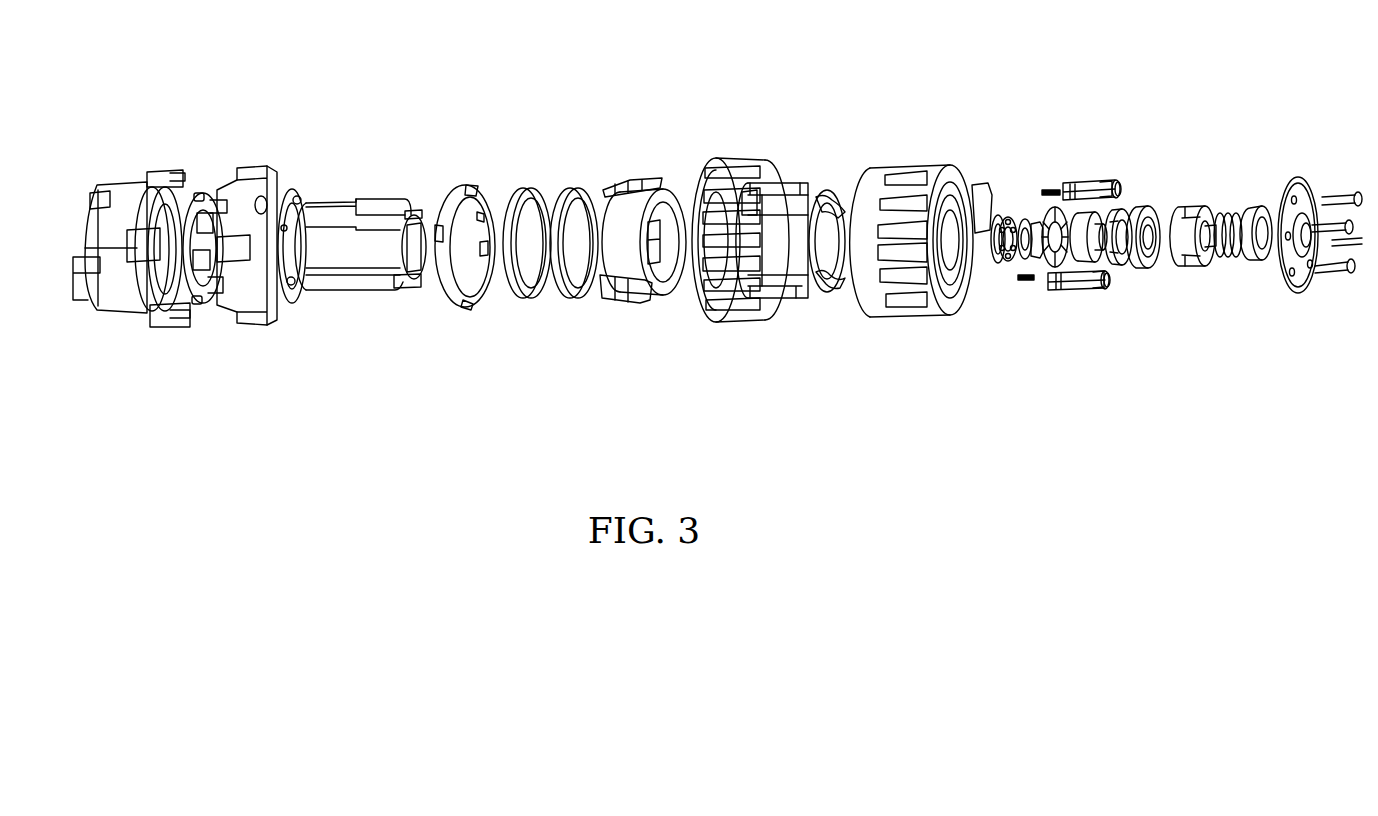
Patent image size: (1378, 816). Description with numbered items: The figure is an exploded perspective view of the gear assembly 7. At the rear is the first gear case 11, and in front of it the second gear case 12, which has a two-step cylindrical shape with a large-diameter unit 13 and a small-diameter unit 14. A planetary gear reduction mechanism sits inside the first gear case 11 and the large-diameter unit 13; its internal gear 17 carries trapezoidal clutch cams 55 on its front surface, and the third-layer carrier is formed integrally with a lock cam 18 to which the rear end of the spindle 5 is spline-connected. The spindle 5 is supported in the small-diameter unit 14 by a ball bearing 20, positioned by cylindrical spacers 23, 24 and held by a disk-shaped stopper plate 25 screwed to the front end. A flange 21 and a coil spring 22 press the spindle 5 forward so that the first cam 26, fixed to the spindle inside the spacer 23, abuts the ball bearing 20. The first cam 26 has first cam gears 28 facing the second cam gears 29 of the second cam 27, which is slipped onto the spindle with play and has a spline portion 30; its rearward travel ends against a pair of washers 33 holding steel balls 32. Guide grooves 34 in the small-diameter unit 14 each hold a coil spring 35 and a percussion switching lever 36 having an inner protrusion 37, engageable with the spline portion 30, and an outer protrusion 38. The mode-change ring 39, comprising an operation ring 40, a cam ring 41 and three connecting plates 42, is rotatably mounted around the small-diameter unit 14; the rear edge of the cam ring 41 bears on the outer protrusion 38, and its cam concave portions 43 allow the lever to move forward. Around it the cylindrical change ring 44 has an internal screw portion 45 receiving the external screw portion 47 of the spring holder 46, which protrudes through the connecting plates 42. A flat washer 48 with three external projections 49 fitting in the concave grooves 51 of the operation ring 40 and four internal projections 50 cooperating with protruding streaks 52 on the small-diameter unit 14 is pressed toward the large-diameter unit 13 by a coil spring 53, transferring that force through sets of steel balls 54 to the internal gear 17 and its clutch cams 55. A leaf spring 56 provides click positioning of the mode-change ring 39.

The spindle 5 is at (1213, 217).
The gear assembly 7 is at (735, 103).
The first gear case 11 is at (119, 190).
The second gear case 12 is at (310, 177).
The large-diameter unit 13 is at (270, 187).
The small-diameter unit 14 is at (352, 213).
The internal gear 17 is at (177, 202).
The lock cam 18 is at (217, 293).
The ball bearing 20 is at (1150, 260).
The flange 21 is at (1258, 237).
The coil spring 22 is at (1230, 257).
The cylindrical spacer 23 is at (1140, 237).
The cylindrical spacer 24 is at (1180, 223).
The stopper plate 25 is at (1303, 197).
The first cam 26 is at (1100, 203).
The second cam 27 is at (1022, 217).
The first cam gears 28 is at (1085, 210).
The second cam gears 29 is at (1055, 270).
The spline portion 30 is at (1018, 217).
The steel balls 32 is at (1010, 267).
The washers 33 is at (990, 215).
The guide grooves 34 is at (430, 207).
The coil spring 35 is at (1048, 192).
The percussion switching lever 36 is at (1112, 198).
The inner protrusion 37 is at (1083, 190).
The outer protrusion 38 is at (1115, 182).
The mode-change ring 39 is at (757, 157).
The operation ring 40 is at (730, 157).
The cam ring 41 is at (812, 190).
The connecting plates 42 is at (780, 185).
The cam concave portions 43 is at (827, 192).
The change ring 44 is at (878, 173).
The internal screw portion 45 is at (928, 310).
The spring holder 46 is at (653, 180).
The external screw portion 47 is at (630, 180).
The flat washer 48 is at (470, 180).
The external projections 49 is at (483, 187).
The internal projections 50 is at (455, 297).
The concave grooves 51 is at (690, 237).
The protruding streaks 52 is at (303, 213).
The coil spring 53 is at (540, 190).
The steel balls 54 is at (282, 190).
The clutch cams 55 is at (202, 195).
The leaf spring 56 is at (970, 233).